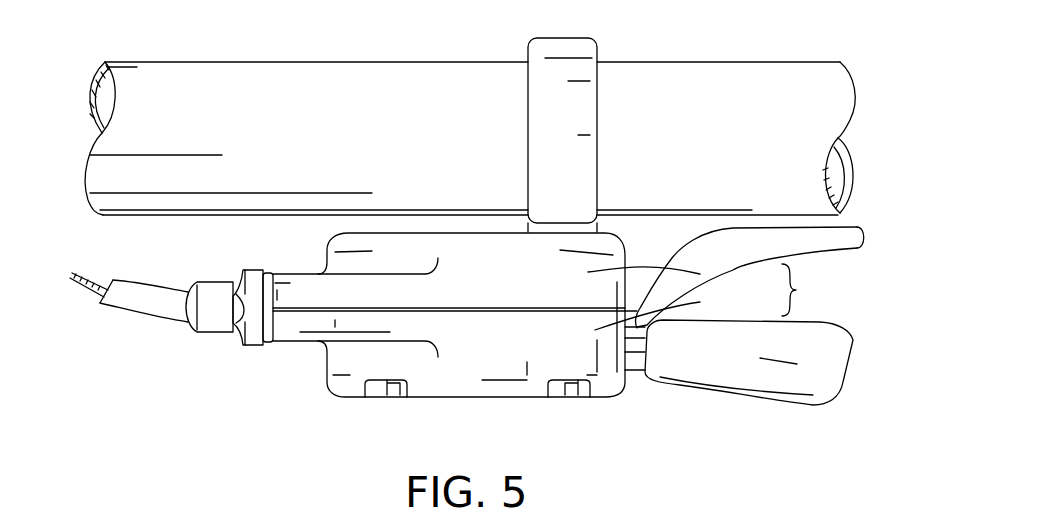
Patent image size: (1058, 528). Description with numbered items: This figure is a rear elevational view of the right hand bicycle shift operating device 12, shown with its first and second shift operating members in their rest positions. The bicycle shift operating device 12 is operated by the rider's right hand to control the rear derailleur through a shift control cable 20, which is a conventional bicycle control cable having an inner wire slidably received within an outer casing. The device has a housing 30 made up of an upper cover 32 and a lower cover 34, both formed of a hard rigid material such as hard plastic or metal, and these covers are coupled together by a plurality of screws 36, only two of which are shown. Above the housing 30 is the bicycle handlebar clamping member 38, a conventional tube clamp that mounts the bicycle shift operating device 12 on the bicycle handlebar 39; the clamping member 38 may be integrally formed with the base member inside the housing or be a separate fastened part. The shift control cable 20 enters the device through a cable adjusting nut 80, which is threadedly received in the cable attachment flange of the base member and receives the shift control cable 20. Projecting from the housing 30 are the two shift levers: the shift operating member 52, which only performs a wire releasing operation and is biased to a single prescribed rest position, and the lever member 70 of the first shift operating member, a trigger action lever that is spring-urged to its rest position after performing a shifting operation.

The bicycle shift operating device 12 is at (253, 410).
The shift control cable 20 is at (140, 318).
The housing 30 is at (796, 290).
The upper cover 32 is at (700, 274).
The lower cover 34 is at (700, 302).
The screws 36 is at (562, 397).
The bicycle handlebar clamping member 38 is at (597, 108).
The bicycle handlebar 39 is at (797, 95).
The shift operating member 52 is at (827, 257).
The lever member 70 is at (727, 397).
The cable adjusting nut 80 is at (218, 283).